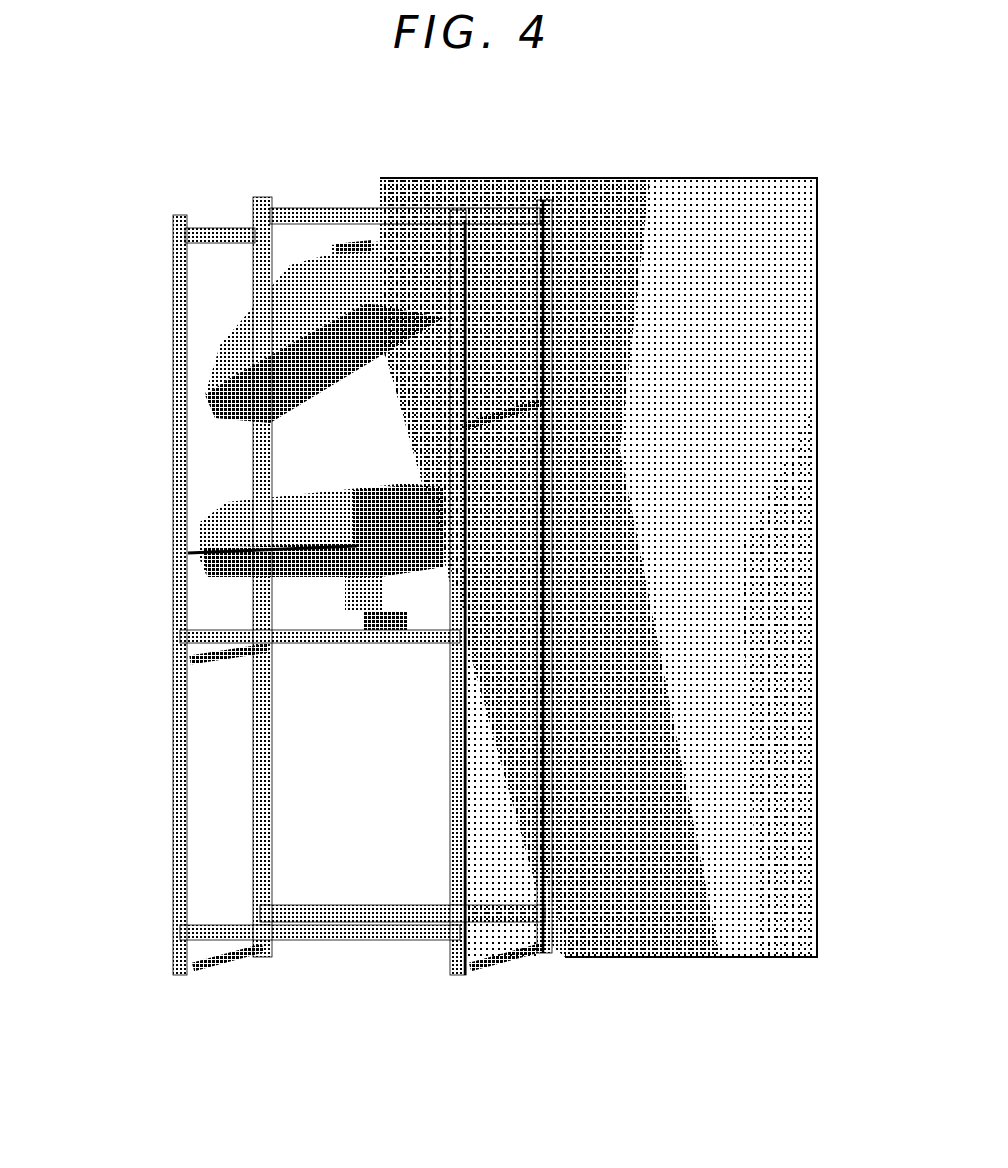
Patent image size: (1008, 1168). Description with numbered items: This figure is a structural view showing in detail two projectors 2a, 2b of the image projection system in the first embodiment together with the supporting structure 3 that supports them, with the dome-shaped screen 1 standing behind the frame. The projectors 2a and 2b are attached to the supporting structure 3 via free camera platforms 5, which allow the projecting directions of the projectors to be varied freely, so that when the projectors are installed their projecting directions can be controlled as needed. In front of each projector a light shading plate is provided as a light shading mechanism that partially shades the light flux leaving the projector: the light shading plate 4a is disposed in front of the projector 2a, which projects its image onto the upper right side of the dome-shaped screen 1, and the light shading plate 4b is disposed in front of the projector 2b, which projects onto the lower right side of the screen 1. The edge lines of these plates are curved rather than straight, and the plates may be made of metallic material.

The dome-shaped screen 1 is at (738, 753).
The projector 2a is at (243, 377).
The projector 2b is at (237, 527).
The supporting structure 3 is at (182, 628).
The light shading plate 4a is at (395, 253).
The light shading plate 4b is at (407, 570).
The free camera platform 5 is at (330, 248).